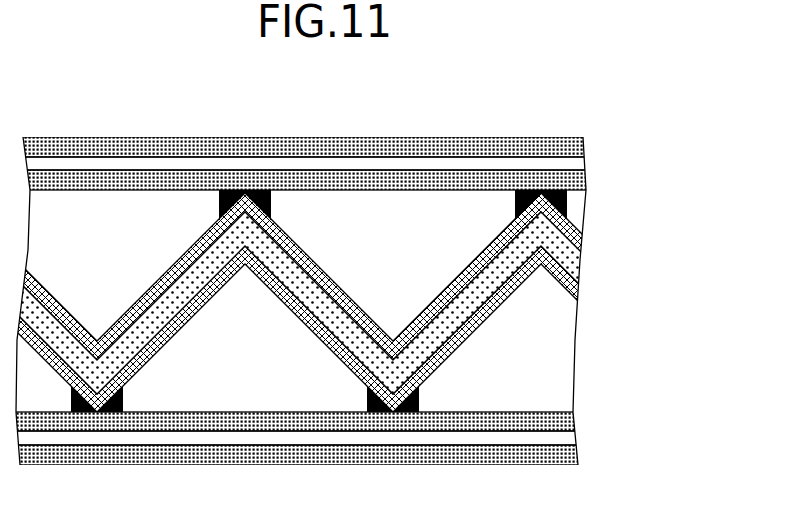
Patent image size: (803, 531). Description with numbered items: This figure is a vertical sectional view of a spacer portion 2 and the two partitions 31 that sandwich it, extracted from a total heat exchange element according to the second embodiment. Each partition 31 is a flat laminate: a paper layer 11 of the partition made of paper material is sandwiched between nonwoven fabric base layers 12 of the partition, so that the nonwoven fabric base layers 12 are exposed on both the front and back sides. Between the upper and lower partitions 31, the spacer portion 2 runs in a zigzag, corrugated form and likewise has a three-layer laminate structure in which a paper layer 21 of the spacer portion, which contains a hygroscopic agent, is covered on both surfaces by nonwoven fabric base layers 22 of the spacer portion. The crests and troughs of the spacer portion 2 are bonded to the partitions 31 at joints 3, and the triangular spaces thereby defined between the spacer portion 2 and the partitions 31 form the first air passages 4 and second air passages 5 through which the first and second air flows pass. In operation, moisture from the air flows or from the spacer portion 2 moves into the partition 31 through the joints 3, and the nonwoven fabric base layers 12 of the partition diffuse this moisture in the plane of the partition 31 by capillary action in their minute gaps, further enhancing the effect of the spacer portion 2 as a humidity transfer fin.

The spacer portion 2 is at (370, 302).
The paper layer of the spacer portion 21 is at (570, 258).
The nonwoven fabric base layer of the spacer portion 22 is at (562, 222).
The joint 3 is at (559, 191).
The first air passage 4 is at (301, 307).
The second air passage 5 is at (112, 235).
The paper layer of the partition 11 is at (576, 164).
The nonwoven fabric base layer of the partition 12 is at (578, 143).
The partition 31 is at (378, 285).